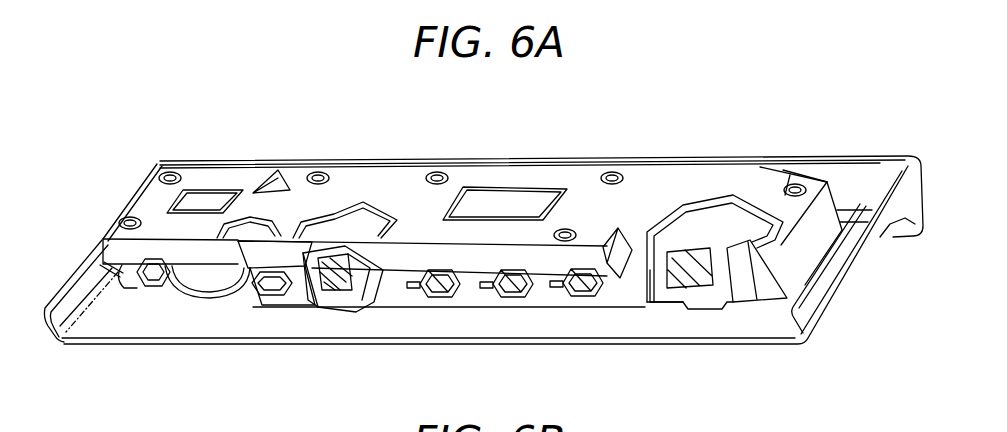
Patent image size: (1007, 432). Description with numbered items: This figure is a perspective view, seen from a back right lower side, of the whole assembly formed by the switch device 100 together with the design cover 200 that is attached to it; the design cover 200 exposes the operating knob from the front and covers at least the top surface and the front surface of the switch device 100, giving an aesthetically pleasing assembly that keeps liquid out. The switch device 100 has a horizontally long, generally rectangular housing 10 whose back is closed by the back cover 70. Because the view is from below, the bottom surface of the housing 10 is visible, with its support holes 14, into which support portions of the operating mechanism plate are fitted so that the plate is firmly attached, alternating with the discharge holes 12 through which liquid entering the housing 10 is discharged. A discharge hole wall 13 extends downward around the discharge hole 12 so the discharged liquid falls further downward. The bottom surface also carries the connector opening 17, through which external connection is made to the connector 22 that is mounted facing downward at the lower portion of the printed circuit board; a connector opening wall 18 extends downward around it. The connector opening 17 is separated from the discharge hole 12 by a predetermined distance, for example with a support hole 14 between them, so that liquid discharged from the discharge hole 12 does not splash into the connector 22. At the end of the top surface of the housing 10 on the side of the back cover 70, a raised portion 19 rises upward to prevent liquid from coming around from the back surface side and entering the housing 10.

The housing 10 is at (223, 182).
The discharge hole 12 is at (152, 285).
The discharge hole wall 13 is at (135, 292).
The support hole 14 is at (415, 290).
The connector opening 17 is at (352, 307).
The connector opening wall 18 is at (318, 315).
The raised portion 19 is at (793, 168).
The connector 22 is at (358, 297).
The back cover 70 is at (638, 170).
The switch device 100 is at (553, 312).
The design cover 200 is at (860, 167).